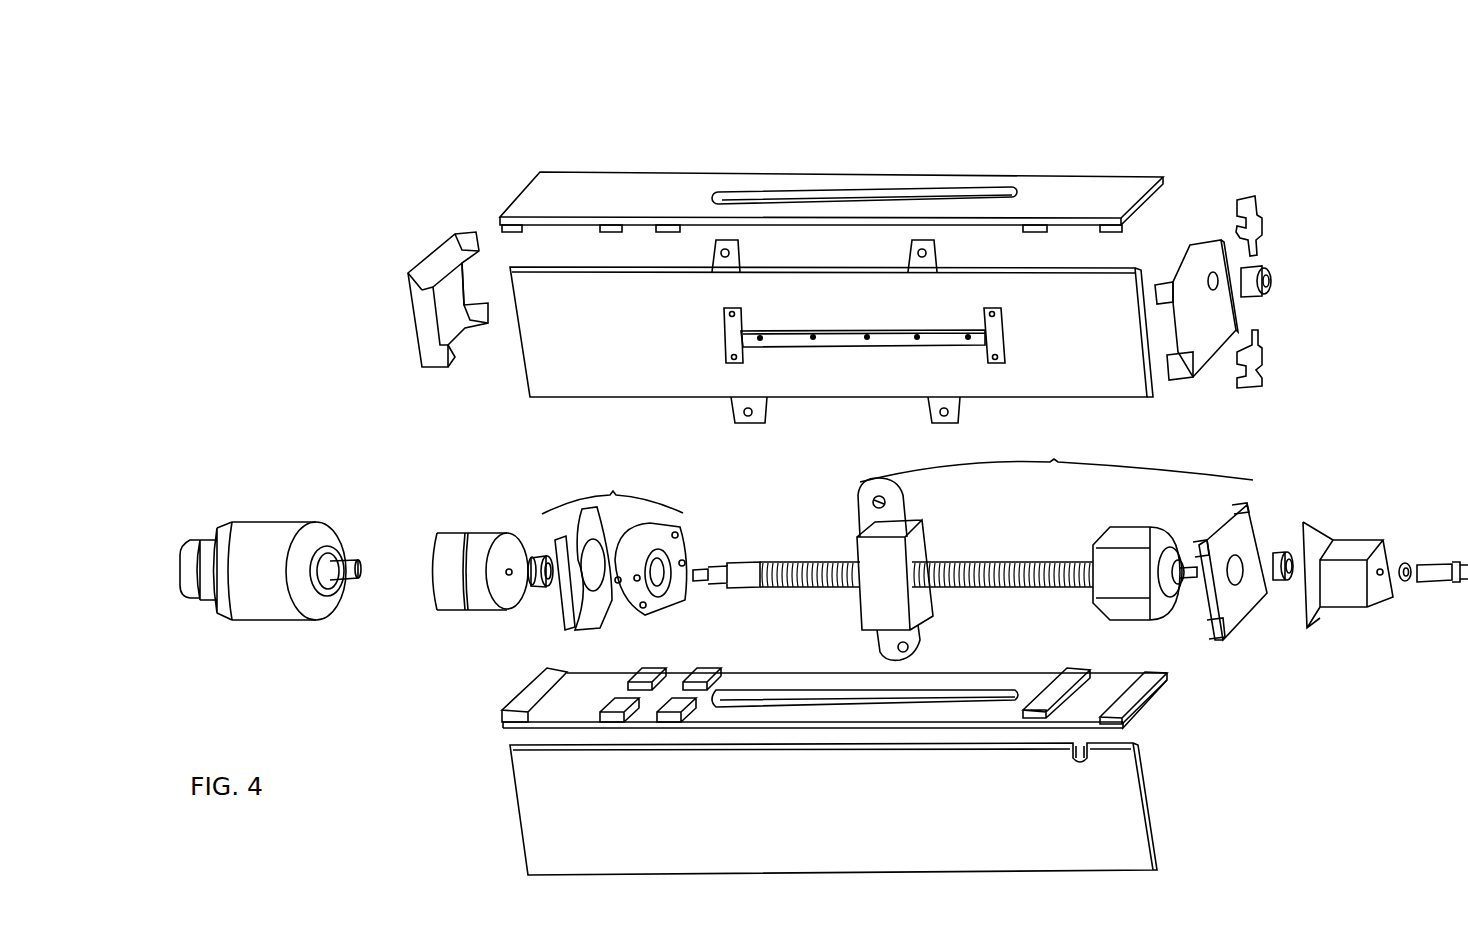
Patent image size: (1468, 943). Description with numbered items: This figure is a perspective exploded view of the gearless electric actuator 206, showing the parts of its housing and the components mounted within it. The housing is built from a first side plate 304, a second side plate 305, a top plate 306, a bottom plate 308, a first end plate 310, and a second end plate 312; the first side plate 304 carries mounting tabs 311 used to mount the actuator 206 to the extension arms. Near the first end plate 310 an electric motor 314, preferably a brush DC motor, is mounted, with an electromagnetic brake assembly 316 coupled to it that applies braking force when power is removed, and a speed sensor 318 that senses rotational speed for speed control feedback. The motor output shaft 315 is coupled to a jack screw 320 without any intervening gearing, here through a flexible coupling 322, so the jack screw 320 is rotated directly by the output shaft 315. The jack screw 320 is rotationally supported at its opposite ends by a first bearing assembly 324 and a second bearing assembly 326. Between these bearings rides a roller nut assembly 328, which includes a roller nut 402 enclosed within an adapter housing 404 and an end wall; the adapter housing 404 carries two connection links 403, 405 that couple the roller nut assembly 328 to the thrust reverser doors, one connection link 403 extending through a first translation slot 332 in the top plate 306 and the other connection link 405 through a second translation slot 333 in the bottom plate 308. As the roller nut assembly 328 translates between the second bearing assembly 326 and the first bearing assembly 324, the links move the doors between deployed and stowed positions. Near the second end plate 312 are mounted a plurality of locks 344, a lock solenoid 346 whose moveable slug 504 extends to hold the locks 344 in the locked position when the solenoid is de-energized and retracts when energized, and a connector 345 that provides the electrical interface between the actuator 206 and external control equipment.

The actuator 206 is at (1368, 240).
The first side plate 304 is at (1087, 343).
The second side plate 305 is at (847, 816).
The top plate 306 is at (615, 190).
The bottom plate 308 is at (503, 722).
The first end plate 310 is at (447, 233).
The mounting tabs 311 is at (735, 415).
The second end plate 312 is at (1214, 238).
The electric motor 314 is at (265, 535).
The output shaft 315 is at (325, 565).
The electromagnetic brake assembly 316 is at (205, 590).
The speed sensor 318 is at (185, 565).
The jack screw 320 is at (805, 570).
The flexible coupling 322 is at (465, 545).
The first bearing assembly 324 is at (614, 546).
The second bearing assembly 326 is at (1285, 578).
The roller nut assembly 328 is at (1055, 547).
The first translation slot 332 is at (855, 190).
The second translation slot 333 is at (800, 695).
The locks 344 is at (1260, 212).
The connector 345 is at (1270, 288).
The lock solenoid 346 is at (1355, 560).
The roller nut 402 is at (1160, 615).
The connection link 403 is at (920, 650).
The adapter housing 404 is at (930, 595).
The connection link 405 is at (910, 520).
The moveable slug 504 is at (1445, 585).